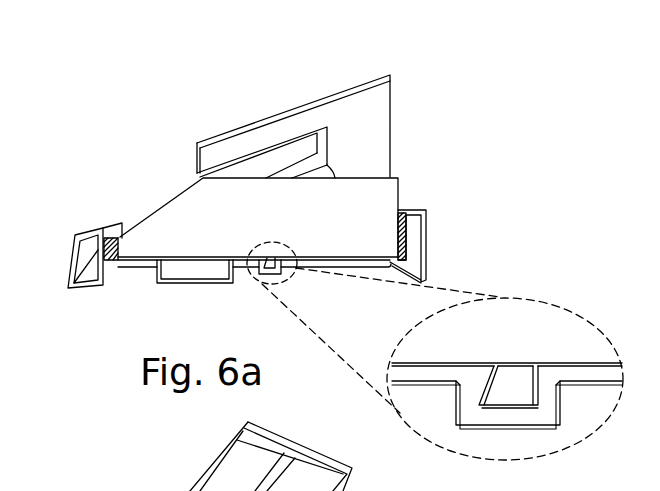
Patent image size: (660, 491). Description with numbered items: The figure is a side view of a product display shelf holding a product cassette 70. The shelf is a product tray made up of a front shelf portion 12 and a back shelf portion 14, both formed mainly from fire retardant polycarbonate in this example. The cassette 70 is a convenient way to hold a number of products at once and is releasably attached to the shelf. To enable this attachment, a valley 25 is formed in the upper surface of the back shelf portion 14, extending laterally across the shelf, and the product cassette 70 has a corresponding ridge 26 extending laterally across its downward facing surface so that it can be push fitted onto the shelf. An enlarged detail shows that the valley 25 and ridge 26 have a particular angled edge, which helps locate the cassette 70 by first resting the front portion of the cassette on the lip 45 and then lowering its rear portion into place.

The product cassette 70 is at (170, 202).
The lip 45 is at (108, 262).
The front shelf portion 12 is at (138, 265).
The valley 25 is at (263, 274).
The back shelf portion 14 is at (378, 263).
The ridge 26 is at (513, 392).